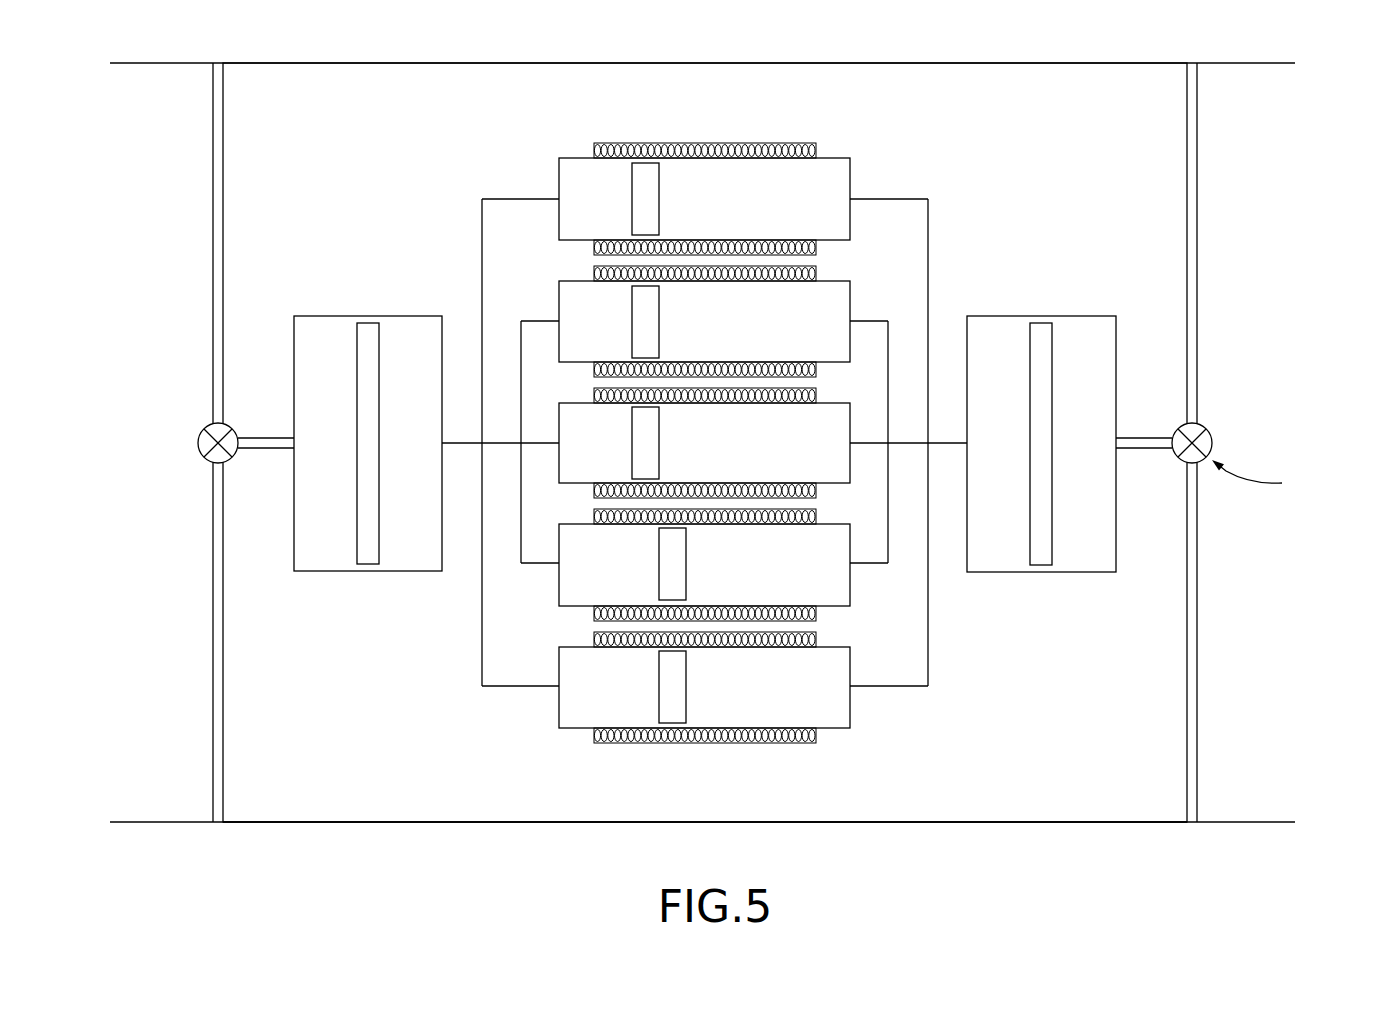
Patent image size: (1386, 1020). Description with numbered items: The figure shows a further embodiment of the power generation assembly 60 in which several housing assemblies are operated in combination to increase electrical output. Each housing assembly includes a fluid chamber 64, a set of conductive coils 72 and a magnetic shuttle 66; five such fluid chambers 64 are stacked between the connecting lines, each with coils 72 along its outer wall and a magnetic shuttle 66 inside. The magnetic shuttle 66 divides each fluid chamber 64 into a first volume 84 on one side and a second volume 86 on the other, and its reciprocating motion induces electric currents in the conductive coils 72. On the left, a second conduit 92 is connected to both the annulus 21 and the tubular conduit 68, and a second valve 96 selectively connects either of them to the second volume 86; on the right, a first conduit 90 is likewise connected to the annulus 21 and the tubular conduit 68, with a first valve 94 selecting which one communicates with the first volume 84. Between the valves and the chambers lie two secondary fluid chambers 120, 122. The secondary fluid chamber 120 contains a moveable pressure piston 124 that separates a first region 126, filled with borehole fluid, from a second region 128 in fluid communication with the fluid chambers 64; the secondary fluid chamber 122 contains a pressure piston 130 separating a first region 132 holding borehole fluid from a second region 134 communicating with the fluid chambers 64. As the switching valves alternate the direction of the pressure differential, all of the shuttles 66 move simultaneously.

The power generation assembly 60 is at (175, 47).
The annulus 21 is at (916, 46).
The tubular conduit 68 is at (921, 843).
The second conduit 92 is at (213, 290).
The first conduit 90 is at (1197, 290).
The second valve 96 is at (198, 443).
The first valve 94 is at (1212, 443).
The second region 134 is at (417, 571).
The first region 132 is at (322, 316).
The secondary fluid chamber 122 is at (408, 316).
The pressure piston 130 is at (369, 564).
The secondary fluid chamber 120 is at (993, 316).
The second region 128 is at (993, 572).
The first region 126 is at (1087, 316).
The pressure piston 124 is at (1040, 565).
The fluid chamber 64 is at (570, 304).
The conductive coils 72 is at (655, 143).
The magnetic shuttle 66 is at (659, 199).
The second volume 86 is at (570, 180).
The first volume 84 is at (840, 180).